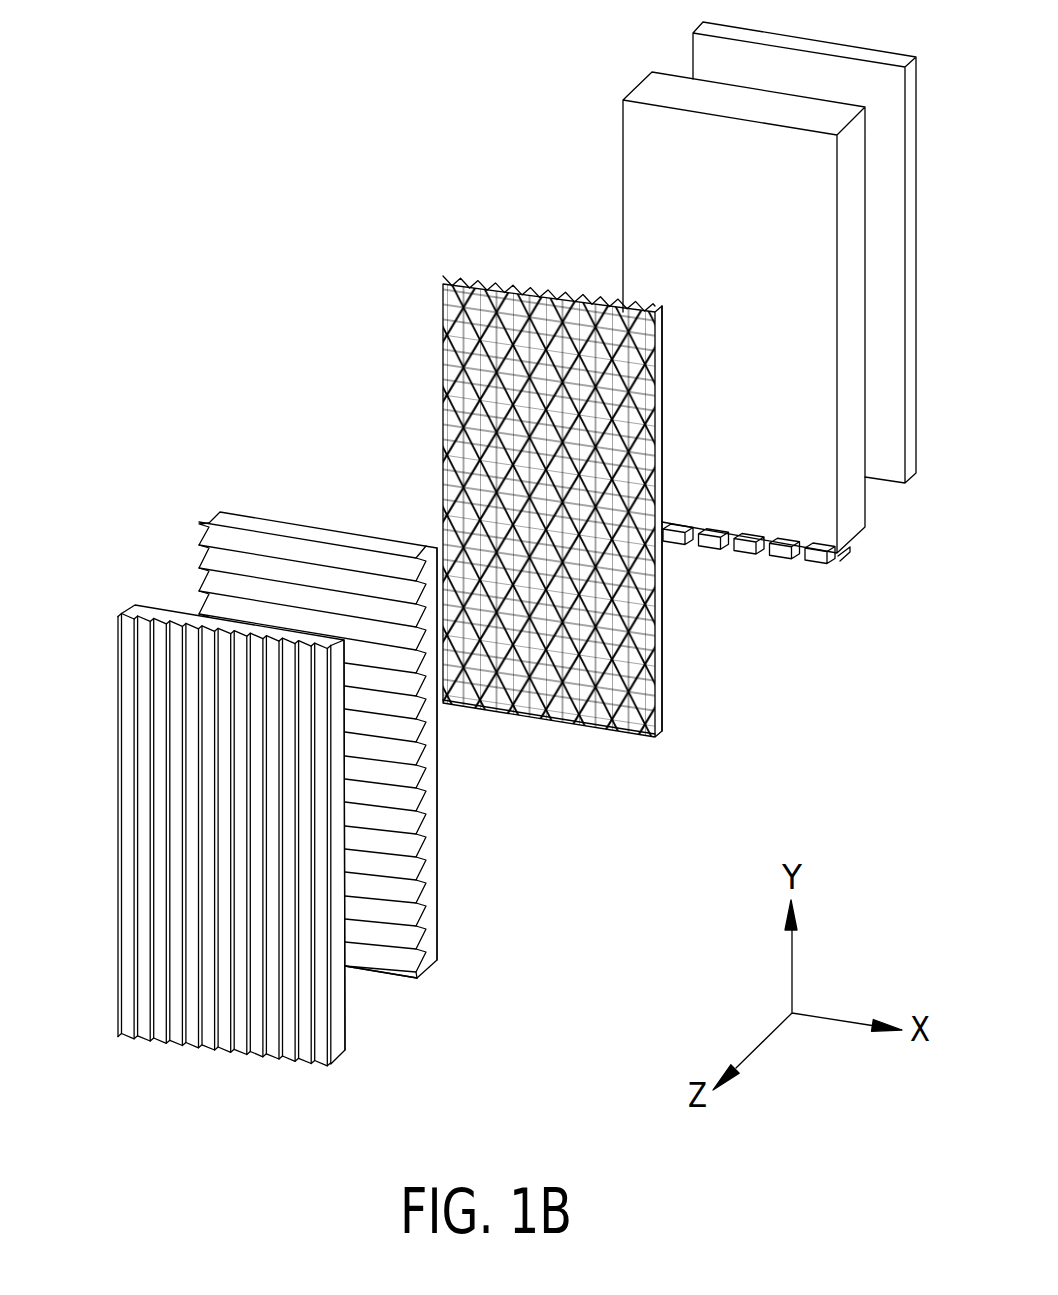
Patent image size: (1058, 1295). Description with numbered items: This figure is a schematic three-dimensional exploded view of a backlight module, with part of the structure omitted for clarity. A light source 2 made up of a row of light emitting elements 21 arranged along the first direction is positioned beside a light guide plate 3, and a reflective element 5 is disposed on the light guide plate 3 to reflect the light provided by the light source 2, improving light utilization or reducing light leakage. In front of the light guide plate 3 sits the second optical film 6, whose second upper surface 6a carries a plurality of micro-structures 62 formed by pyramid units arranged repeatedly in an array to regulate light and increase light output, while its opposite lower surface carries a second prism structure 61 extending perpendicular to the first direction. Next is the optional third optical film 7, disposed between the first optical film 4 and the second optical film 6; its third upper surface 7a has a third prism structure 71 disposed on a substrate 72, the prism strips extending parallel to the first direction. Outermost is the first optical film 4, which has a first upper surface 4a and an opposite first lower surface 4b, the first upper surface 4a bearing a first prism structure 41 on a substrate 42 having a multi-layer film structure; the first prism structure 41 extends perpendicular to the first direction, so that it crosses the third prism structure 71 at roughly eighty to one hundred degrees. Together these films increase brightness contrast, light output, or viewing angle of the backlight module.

The light source 2 is at (756, 588).
The light emitting elements 21 is at (817, 563).
The light guide plate 3 is at (633, 137).
The first optical film 4 is at (214, 845).
The first prism structure 41 is at (224, 840).
The substrate 42 is at (234, 834).
The first upper surface 4a is at (322, 1065).
The first lower surface 4b is at (347, 1044).
The reflective element 5 is at (700, 50).
The second optical film 6 is at (535, 521).
The second prism structure 61 is at (553, 511).
The micro-structures 62 is at (552, 510).
The second upper surface 6a is at (549, 717).
The third optical film 7 is at (300, 753).
The third prism structure 71 is at (312, 750).
The substrate 72 is at (323, 745).
The third upper surface 7a is at (381, 972).